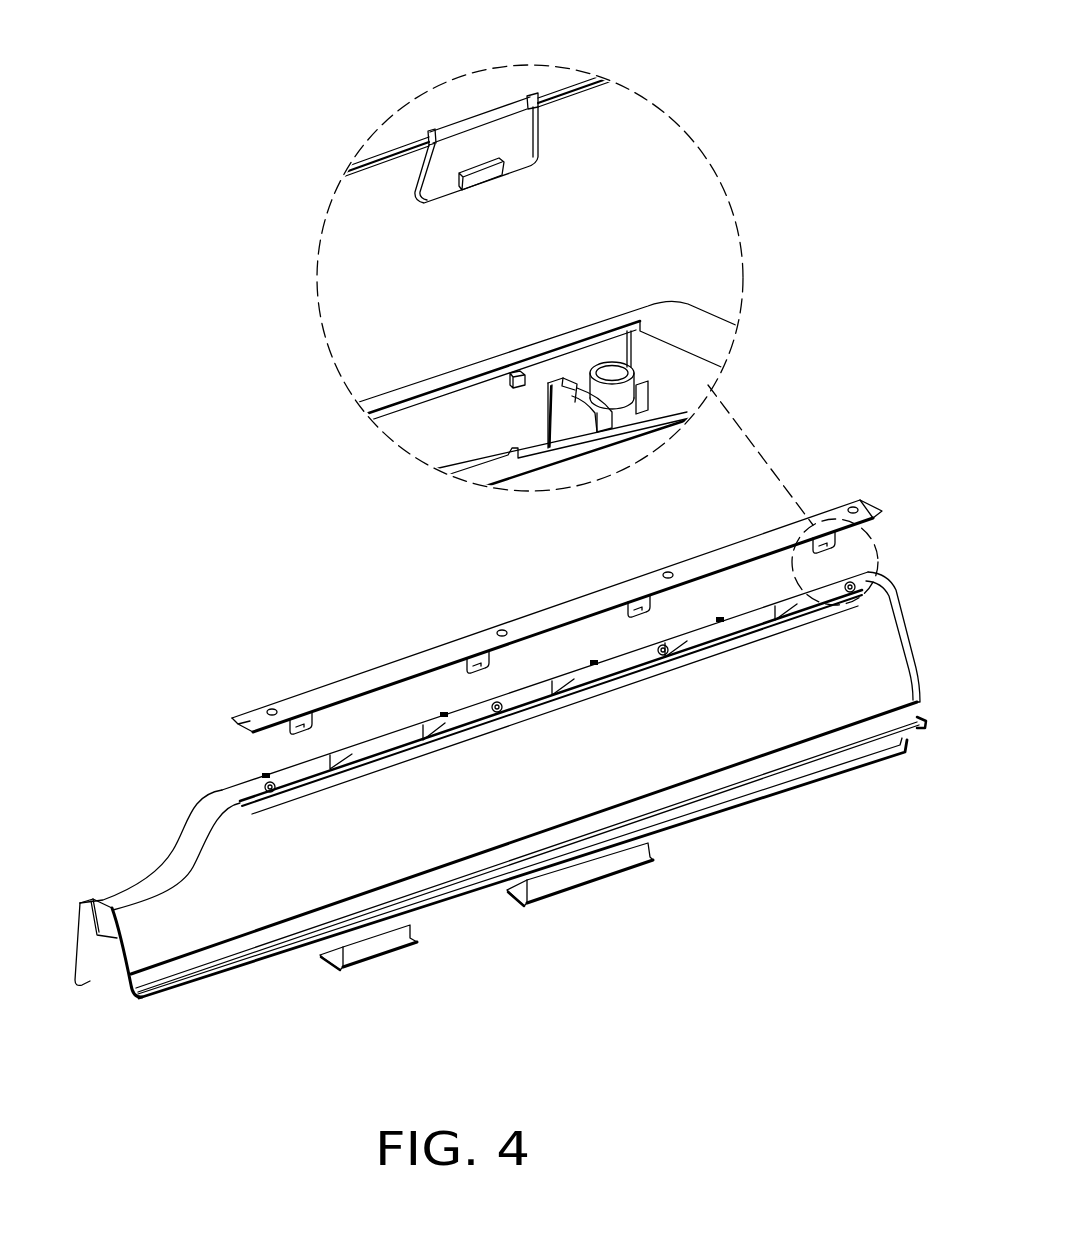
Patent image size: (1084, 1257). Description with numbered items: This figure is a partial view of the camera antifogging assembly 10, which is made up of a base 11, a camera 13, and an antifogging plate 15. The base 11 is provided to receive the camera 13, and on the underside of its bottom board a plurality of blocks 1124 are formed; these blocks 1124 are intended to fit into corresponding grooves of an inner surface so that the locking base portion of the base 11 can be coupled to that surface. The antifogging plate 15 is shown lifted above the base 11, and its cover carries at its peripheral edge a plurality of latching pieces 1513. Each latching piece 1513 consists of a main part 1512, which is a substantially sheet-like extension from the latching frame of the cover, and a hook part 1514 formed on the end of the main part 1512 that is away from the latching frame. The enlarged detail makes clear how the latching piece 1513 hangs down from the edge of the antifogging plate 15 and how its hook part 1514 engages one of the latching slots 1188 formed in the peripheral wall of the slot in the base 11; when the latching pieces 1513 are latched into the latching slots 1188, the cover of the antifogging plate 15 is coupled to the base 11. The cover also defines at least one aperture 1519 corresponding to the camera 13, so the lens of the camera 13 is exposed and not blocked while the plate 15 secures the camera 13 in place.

The camera antifogging assembly 10 is at (314, 37).
The base 11 is at (243, 858).
The blocks 1124 is at (575, 876).
The camera 13 is at (615, 376).
The latching slots 1188 is at (546, 374).
The antifogging plate 15 is at (325, 692).
The aperture 1519 is at (503, 628).
The main part 1512 is at (522, 129).
The hook part 1514 is at (497, 177).
The latching piece 1513 is at (813, 108).